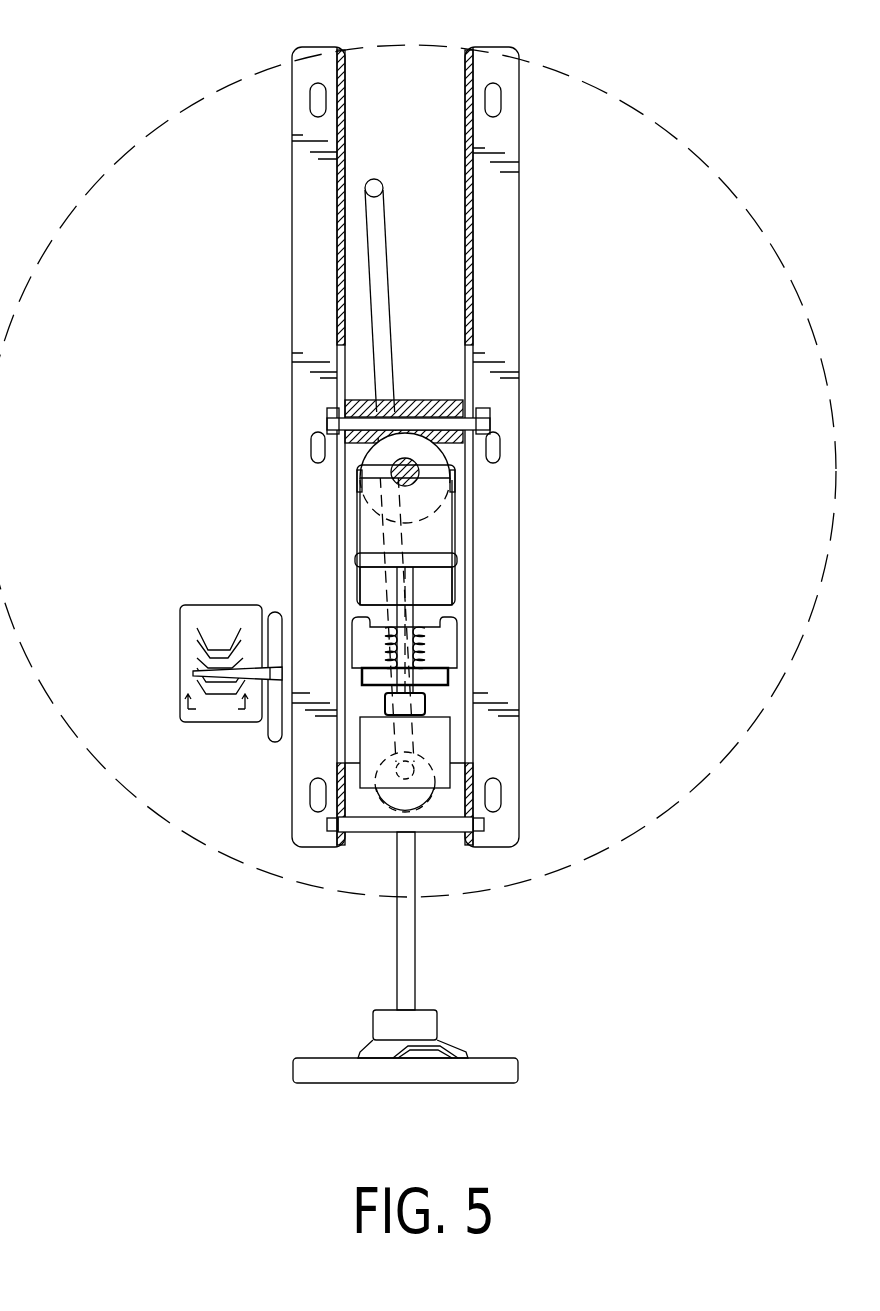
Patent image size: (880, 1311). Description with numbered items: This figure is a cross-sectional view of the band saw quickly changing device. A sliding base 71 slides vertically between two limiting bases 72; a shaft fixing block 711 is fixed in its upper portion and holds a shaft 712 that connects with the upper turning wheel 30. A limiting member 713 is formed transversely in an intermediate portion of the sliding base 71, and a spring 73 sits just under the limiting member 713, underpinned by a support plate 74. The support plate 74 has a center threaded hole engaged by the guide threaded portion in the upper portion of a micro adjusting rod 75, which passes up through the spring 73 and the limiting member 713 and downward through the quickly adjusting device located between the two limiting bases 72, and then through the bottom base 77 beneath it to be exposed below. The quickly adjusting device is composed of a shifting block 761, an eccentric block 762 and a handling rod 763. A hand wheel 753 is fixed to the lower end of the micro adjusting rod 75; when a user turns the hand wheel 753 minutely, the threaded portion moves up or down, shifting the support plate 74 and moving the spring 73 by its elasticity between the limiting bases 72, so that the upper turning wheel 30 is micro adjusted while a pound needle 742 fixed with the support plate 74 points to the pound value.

The upper turning wheel 30 is at (110, 145).
The limiting bases 72 is at (519, 252).
The handling rod 763 is at (378, 280).
The shaft fixing block 711 is at (430, 402).
The sliding base 71 is at (460, 506).
The shaft 712 is at (391, 468).
The limiting member 713 is at (430, 600).
The spring 73 is at (430, 640).
The shifting block 761 is at (428, 703).
The eccentric block 762 is at (375, 743).
The bottom base 77 is at (436, 832).
The micro adjusting rod 75 is at (405, 933).
The hand wheel 753 is at (512, 1070).
The pound needle 742 is at (237, 663).
The support plate 74 is at (345, 695).